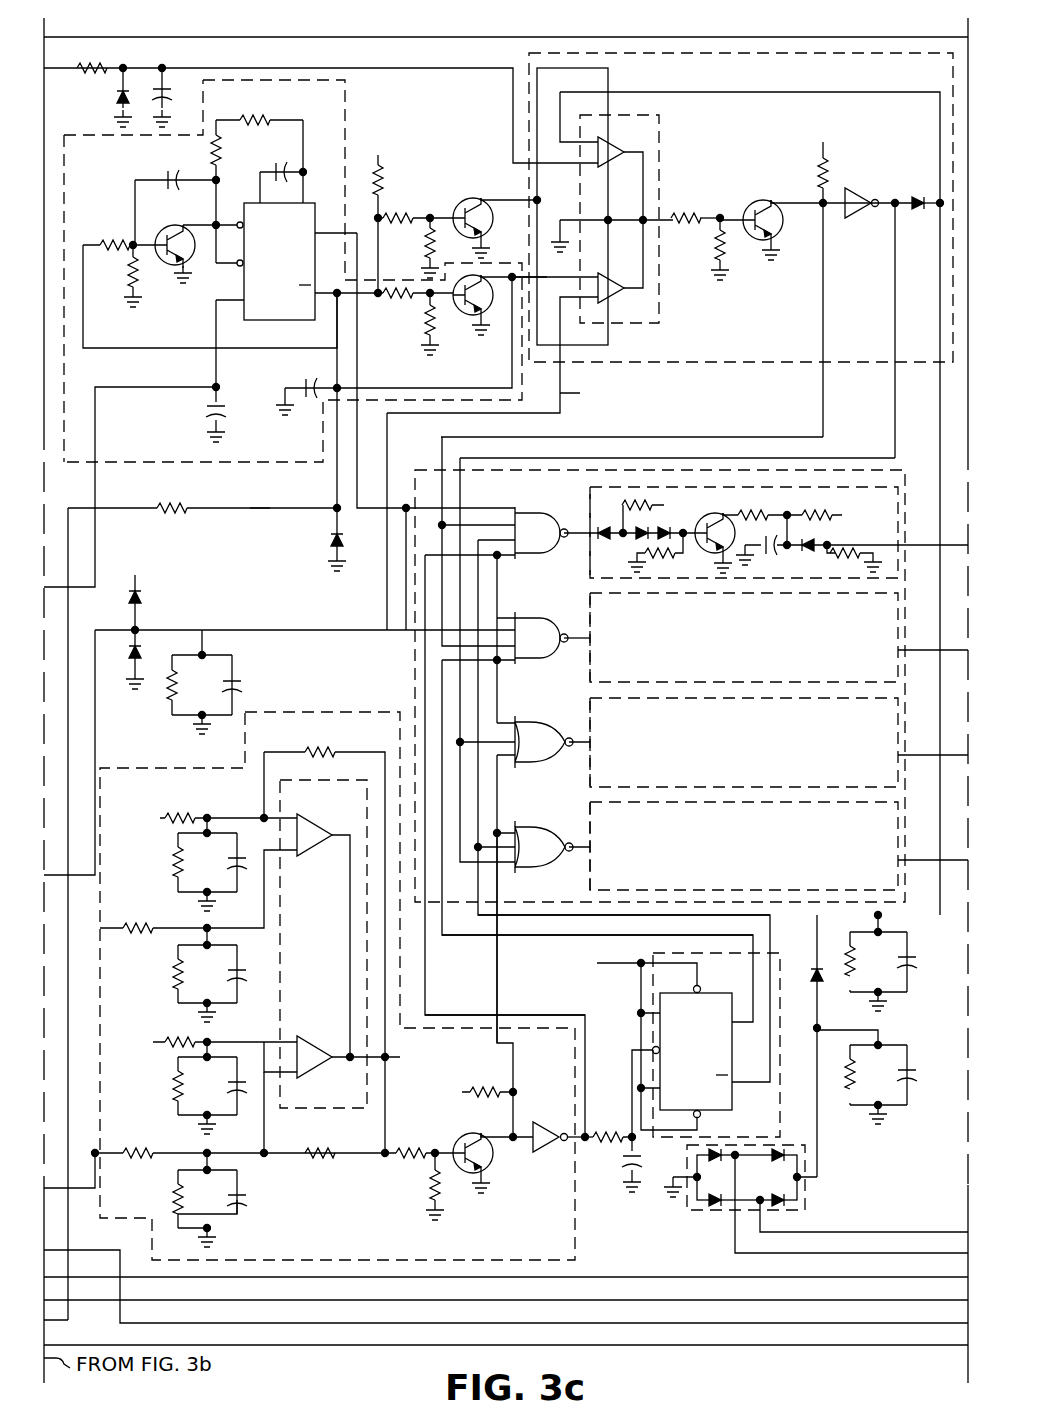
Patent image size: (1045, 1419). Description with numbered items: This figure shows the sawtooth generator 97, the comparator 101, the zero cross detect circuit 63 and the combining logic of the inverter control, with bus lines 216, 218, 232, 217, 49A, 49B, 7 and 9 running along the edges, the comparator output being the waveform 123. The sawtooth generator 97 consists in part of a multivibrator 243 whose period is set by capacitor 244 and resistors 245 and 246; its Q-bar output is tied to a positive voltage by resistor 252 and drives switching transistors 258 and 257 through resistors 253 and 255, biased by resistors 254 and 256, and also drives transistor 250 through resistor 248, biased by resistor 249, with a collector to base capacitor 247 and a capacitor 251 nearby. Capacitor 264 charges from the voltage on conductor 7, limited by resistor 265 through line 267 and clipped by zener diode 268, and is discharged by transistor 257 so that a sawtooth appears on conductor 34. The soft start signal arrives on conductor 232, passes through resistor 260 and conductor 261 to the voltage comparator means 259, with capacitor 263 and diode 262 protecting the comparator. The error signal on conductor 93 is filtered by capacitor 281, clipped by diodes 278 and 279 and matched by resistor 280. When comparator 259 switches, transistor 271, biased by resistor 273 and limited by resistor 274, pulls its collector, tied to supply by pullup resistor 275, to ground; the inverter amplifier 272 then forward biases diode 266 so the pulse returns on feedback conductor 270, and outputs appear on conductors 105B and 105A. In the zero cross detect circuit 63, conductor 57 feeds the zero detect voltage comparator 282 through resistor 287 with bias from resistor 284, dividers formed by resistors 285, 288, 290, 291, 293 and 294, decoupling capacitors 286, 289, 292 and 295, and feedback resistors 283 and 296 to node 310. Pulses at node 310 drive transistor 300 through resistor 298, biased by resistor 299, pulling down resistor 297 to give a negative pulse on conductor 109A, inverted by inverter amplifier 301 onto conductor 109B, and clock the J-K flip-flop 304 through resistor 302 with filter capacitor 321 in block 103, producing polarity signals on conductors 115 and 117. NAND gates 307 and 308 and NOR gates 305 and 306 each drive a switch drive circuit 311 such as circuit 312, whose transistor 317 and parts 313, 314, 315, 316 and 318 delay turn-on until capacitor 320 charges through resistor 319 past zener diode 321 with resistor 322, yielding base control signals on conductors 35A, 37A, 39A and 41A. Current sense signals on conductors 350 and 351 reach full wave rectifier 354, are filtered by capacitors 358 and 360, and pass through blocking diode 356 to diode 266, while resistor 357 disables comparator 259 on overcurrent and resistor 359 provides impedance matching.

The bus line 216 is at (86, 30).
The waveform 123 is at (519, 31).
The conductor 232 is at (64, 78).
The sawtooth generator 97 is at (120, 463).
The line 218 is at (88, 490).
The resistor 260 is at (92, 68).
The conductor 261 is at (168, 68).
The diode 262 is at (121, 99).
The capacitor 263 is at (167, 100).
The resistor 245 is at (258, 115).
The resistor 246 is at (223, 150).
The collector to base capacitor 247 is at (171, 166).
The capacitor 244 is at (279, 164).
The multivibrator 243 is at (315, 203).
The switching transistor 250 is at (162, 223).
The resistor 248 is at (110, 227).
The resistor 249 is at (130, 288).
The capacitor 251 is at (202, 415).
The capacitor 264 is at (300, 382).
The resistor 265 is at (175, 503).
The line 267 is at (246, 505).
The zener diode 268 is at (328, 542).
The diode 278 is at (140, 600).
The diode 279 is at (126, 640).
The conductor 93 is at (565, 390).
The resistor 280 is at (164, 690).
The capacitor 281 is at (241, 688).
The resistor 252 is at (379, 180).
The resistor 253 is at (405, 215).
The resistor 254 is at (427, 244).
The switching transistor 258 is at (470, 195).
The resistor 255 is at (398, 301).
The resistor 256 is at (427, 334).
The transistor switch 257 is at (475, 333).
The conductor 34 is at (545, 275).
The comparator 101 is at (712, 364).
The voltage comparator means 259 is at (665, 146).
The feedback conductor 270 is at (766, 92).
The resistor 274 is at (686, 213).
The resistor 273 is at (717, 251).
The transistor 271 is at (760, 195).
The pullup resistor 275 is at (820, 168).
The inverter amplifier 272 is at (856, 195).
The diode 266 is at (915, 199).
The conductor 105A is at (823, 404).
The conductor 105B is at (896, 404).
The switch drive circuit 311 is at (590, 572).
The four input NAND gate 307 is at (546, 512).
The four input NAND gate 308 is at (546, 620).
The three input NOR gate 305 is at (546, 723).
The three input NOR gate 306 is at (546, 827).
The driver circuit 312 is at (656, 484).
The diode 314 is at (607, 544).
The resistor 313 is at (612, 530).
The diode 315 is at (660, 526).
The resistor 316 is at (652, 560).
The transistor 318 is at (731, 543).
The transistor device 317 is at (714, 513).
The resistor 319 is at (816, 506).
The capacitor 320 is at (787, 560).
The zener diode 321 is at (808, 540).
The resistor 322 is at (847, 548).
The conductor 35A is at (920, 542).
The conductor 37A is at (920, 647).
The conductor 39A is at (920, 747).
The conductor 41A is at (920, 852).
The conductor 117 is at (480, 915).
The conductor 115 is at (466, 937).
The conductor 109A is at (494, 988).
The conductor 109B is at (524, 1014).
The zero cross detect circuit 63 is at (334, 708).
The zero detect voltage comparator 282 is at (320, 779).
The resistor 283 is at (320, 752).
The resistor 284 is at (183, 818).
The resistor 285 is at (175, 862).
The capacitor 286 is at (228, 866).
The resistor 287 is at (143, 927).
The resistor 288 is at (175, 973).
The capacitor 289 is at (228, 976).
The resistor 290 is at (160, 1040).
The resistor 291 is at (175, 1085).
The capacitor 292 is at (226, 1089).
The resistor 293 is at (143, 1150).
The resistor 294 is at (172, 1197).
The capacitor 295 is at (225, 1201).
The resistor 296 is at (320, 1150).
The node point 310 is at (350, 946).
The conductor 57 is at (78, 1192).
The resistor 298 is at (420, 1147).
The resistor 299 is at (430, 1180).
The transistor switch means 300 is at (495, 1165).
The resistor 297 is at (486, 1090).
The inverter amplifier 301 is at (553, 1120).
The resistor 302 is at (610, 1122).
The J-K flip-flop 304 is at (718, 988).
The dashed block 103 is at (667, 1137).
The full wave rectifier 354 is at (805, 1195).
The blocking diode 356 is at (810, 971).
The resistor 359 is at (858, 960).
The capacitor 360 is at (916, 956).
The resistor 357 is at (856, 1075).
The capacitor 358 is at (916, 1069).
The conductor 350 is at (918, 1232).
The conductor 351 is at (918, 1255).
The line 49A is at (80, 1264).
The line 49B is at (80, 1287).
The line 217 is at (84, 1238).
The conductor 7 is at (68, 1312).
The line 9 is at (99, 1354).